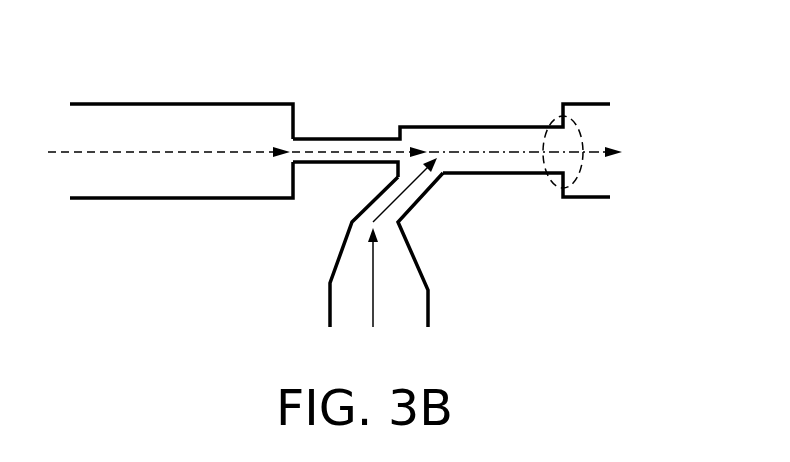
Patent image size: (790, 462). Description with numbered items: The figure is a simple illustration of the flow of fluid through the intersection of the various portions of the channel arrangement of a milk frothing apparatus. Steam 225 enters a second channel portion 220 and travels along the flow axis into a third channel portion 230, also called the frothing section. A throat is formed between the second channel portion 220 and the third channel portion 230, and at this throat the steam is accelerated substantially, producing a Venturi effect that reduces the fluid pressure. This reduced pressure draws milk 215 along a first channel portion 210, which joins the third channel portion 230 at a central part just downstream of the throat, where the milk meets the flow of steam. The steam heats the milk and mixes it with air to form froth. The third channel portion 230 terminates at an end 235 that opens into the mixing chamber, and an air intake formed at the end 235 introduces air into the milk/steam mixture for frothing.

The first channel portion 210 is at (463, 223).
The milk 215 is at (373, 282).
The second channel portion 220 is at (70, 83).
The steam 225 is at (165, 153).
The third channel portion 230 is at (295, 83).
The end 235 is at (582, 168).